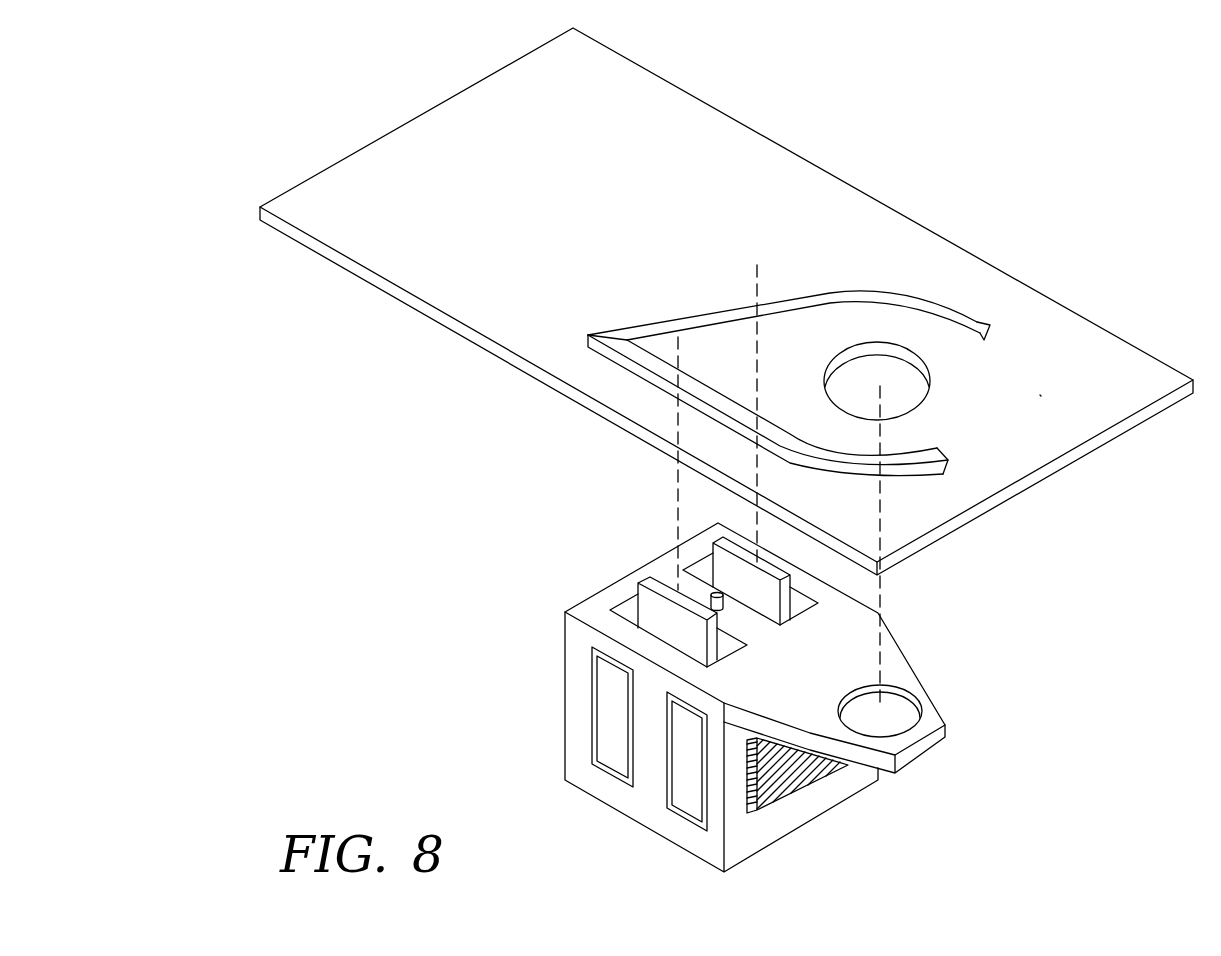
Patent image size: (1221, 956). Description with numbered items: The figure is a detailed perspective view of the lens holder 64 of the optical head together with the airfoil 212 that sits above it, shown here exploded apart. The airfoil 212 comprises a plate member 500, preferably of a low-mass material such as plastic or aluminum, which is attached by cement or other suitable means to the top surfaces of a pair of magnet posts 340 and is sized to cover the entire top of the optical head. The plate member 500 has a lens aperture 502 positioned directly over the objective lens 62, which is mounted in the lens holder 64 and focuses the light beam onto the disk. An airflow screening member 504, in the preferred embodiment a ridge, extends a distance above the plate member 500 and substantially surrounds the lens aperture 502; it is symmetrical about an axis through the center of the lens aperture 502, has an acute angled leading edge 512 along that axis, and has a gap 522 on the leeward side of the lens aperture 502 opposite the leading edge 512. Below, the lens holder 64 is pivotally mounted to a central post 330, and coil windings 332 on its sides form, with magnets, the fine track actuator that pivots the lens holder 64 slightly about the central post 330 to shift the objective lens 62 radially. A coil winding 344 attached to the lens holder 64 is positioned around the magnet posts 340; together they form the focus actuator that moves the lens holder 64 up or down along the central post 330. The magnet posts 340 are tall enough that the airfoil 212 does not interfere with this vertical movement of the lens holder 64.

The airfoil 212 is at (378, 138).
The plate member 500 is at (613, 181).
The leading edge 512 is at (588, 336).
The airflow screening member 504 is at (703, 315).
The lens aperture 502 is at (863, 341).
The gap 522 is at (968, 392).
The magnet posts 340 is at (720, 565).
The lens holder 64 is at (839, 633).
The central post 330 is at (725, 600).
The objective lens 62 is at (892, 707).
The coil windings 332 is at (665, 778).
The coil winding 344 is at (807, 772).